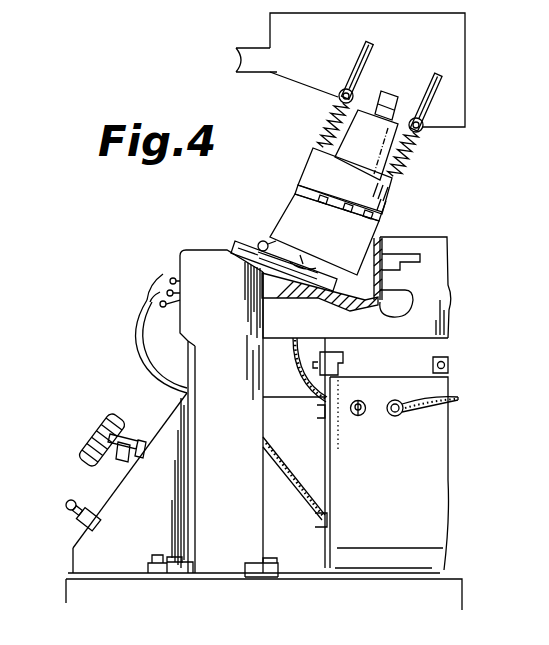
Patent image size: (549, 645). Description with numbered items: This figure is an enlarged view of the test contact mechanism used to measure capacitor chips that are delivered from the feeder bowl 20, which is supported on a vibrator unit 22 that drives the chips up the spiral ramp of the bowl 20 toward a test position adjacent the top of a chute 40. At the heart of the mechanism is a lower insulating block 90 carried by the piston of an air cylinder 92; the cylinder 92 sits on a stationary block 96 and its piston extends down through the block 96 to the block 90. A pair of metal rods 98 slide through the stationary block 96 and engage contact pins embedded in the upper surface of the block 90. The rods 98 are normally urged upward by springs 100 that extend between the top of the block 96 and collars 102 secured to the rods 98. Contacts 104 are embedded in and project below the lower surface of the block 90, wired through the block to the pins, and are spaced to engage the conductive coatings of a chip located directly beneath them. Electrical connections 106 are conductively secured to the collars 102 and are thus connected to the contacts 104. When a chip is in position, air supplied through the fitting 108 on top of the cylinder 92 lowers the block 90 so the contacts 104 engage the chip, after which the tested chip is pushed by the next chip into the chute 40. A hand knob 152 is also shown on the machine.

The feeder bowl 20 is at (446, 312).
The vibrator unit 22 is at (403, 487).
The chute 40 is at (236, 416).
The lower insulating block 90 is at (283, 210).
The air cylinder 92 is at (378, 152).
The stationary block 96 is at (380, 210).
The metal rods 98 is at (353, 60).
The springs 100 is at (408, 163).
The collars 102 is at (342, 90).
The contacts 104 is at (284, 246).
The electrical connections 106 is at (235, 55).
The fitting 108 is at (377, 90).
The hand knob 152 is at (97, 432).